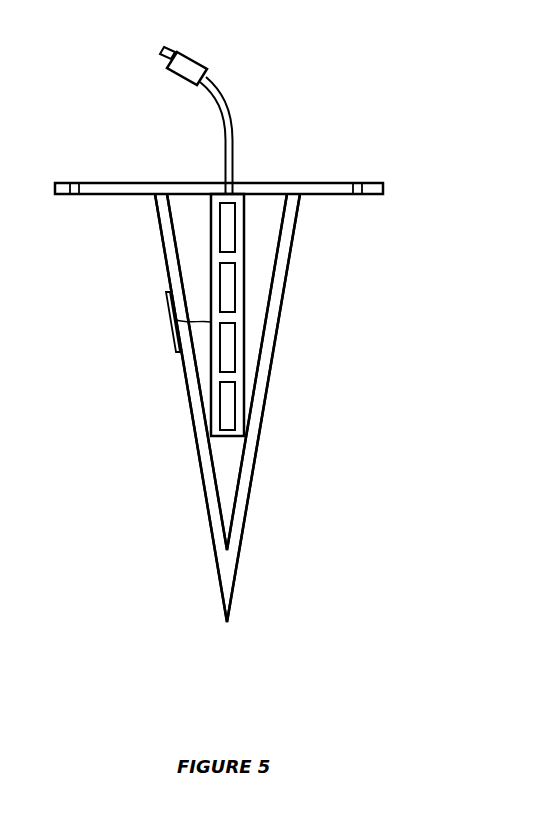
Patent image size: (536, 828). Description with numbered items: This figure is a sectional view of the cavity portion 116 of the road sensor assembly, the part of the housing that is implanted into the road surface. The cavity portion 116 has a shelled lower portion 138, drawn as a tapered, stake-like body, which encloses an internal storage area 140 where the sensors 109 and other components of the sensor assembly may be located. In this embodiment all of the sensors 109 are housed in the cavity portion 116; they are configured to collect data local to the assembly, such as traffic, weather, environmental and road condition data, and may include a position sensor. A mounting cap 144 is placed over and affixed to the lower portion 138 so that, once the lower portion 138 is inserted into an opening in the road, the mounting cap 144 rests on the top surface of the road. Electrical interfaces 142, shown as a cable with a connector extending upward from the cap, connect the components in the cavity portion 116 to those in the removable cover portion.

The cavity portion 116 is at (193, 535).
The shelled lower portion 138 is at (238, 567).
The internal storage area 140 is at (227, 463).
The mounting cap 144 is at (385, 189).
The electrical interfaces 142 is at (225, 98).
The sensors 109 is at (245, 268).